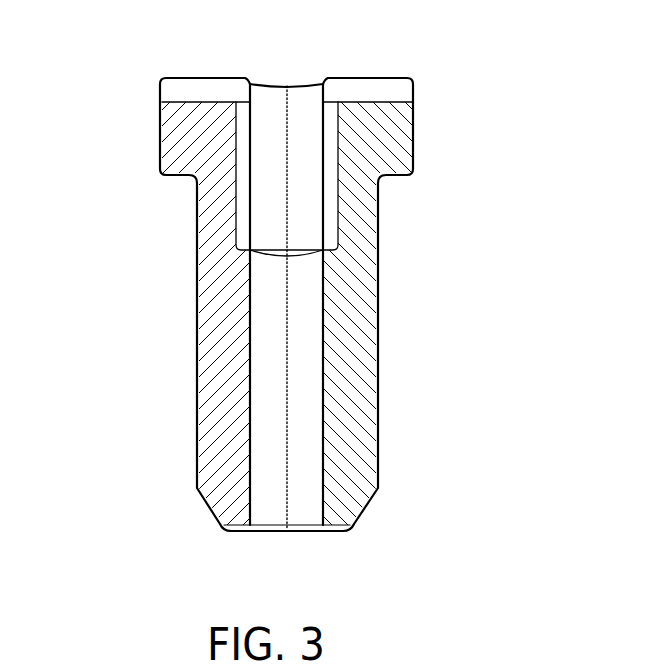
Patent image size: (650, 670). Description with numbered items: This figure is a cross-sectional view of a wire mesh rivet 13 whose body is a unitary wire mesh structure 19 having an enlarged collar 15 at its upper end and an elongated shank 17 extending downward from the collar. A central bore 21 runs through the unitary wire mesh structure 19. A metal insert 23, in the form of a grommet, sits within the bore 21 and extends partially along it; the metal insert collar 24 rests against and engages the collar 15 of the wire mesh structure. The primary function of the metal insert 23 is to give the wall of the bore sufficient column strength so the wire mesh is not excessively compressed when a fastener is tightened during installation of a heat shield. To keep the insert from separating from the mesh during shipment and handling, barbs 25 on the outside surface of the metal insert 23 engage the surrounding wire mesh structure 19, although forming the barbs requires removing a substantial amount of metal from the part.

The wire mesh rivet 13 is at (163, 258).
The collar of wire mesh rivet 15 is at (383, 147).
The shank of wire mesh rivet 17 is at (353, 409).
The unitary wire mesh structure of wire mesh rivet 19 is at (233, 415).
The bore of unitary wire mesh structure 21 is at (302, 328).
The metal insert 23 is at (299, 214).
The metal insert collar 24 is at (377, 90).
The barb on metal insert 25 is at (235, 182).